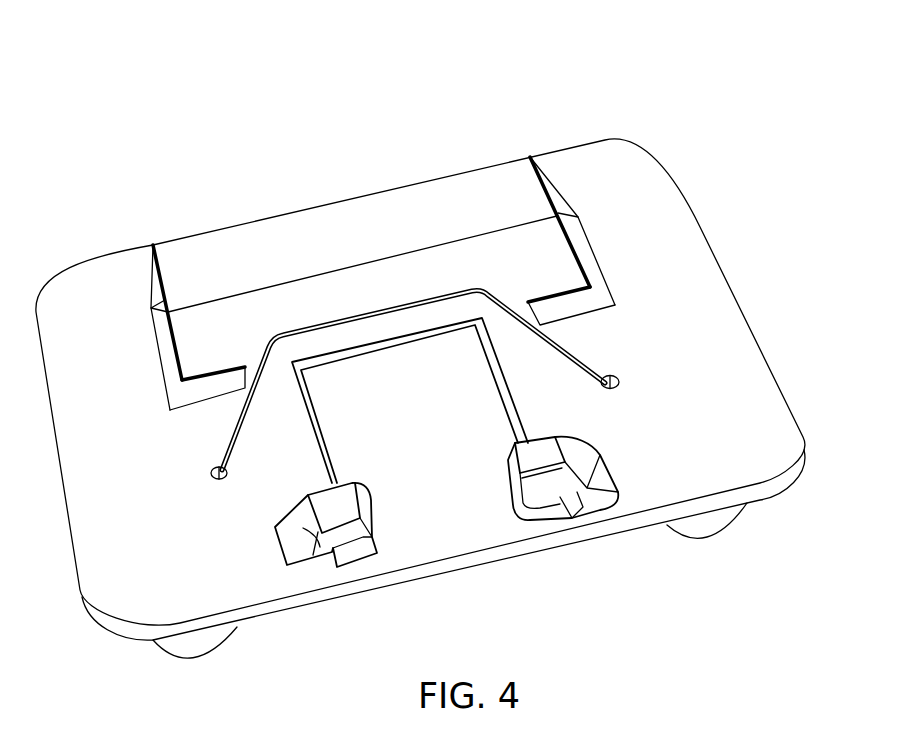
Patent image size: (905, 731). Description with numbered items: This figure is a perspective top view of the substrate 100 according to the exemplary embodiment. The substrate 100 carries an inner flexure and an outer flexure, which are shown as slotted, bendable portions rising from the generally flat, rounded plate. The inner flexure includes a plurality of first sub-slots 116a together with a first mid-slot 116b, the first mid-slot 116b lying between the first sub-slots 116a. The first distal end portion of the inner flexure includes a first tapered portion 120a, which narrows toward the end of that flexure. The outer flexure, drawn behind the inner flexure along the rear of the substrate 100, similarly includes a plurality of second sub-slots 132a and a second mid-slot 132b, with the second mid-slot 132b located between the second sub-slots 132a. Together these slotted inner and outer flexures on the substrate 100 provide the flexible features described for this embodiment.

The substrate 100 is at (710, 73).
The first sub-slots 116a is at (517, 428).
The first mid-slot 116b is at (322, 354).
The first tapered portion 120a is at (390, 348).
The second sub-slots 132a is at (222, 423).
The second mid-slot 132b is at (368, 314).